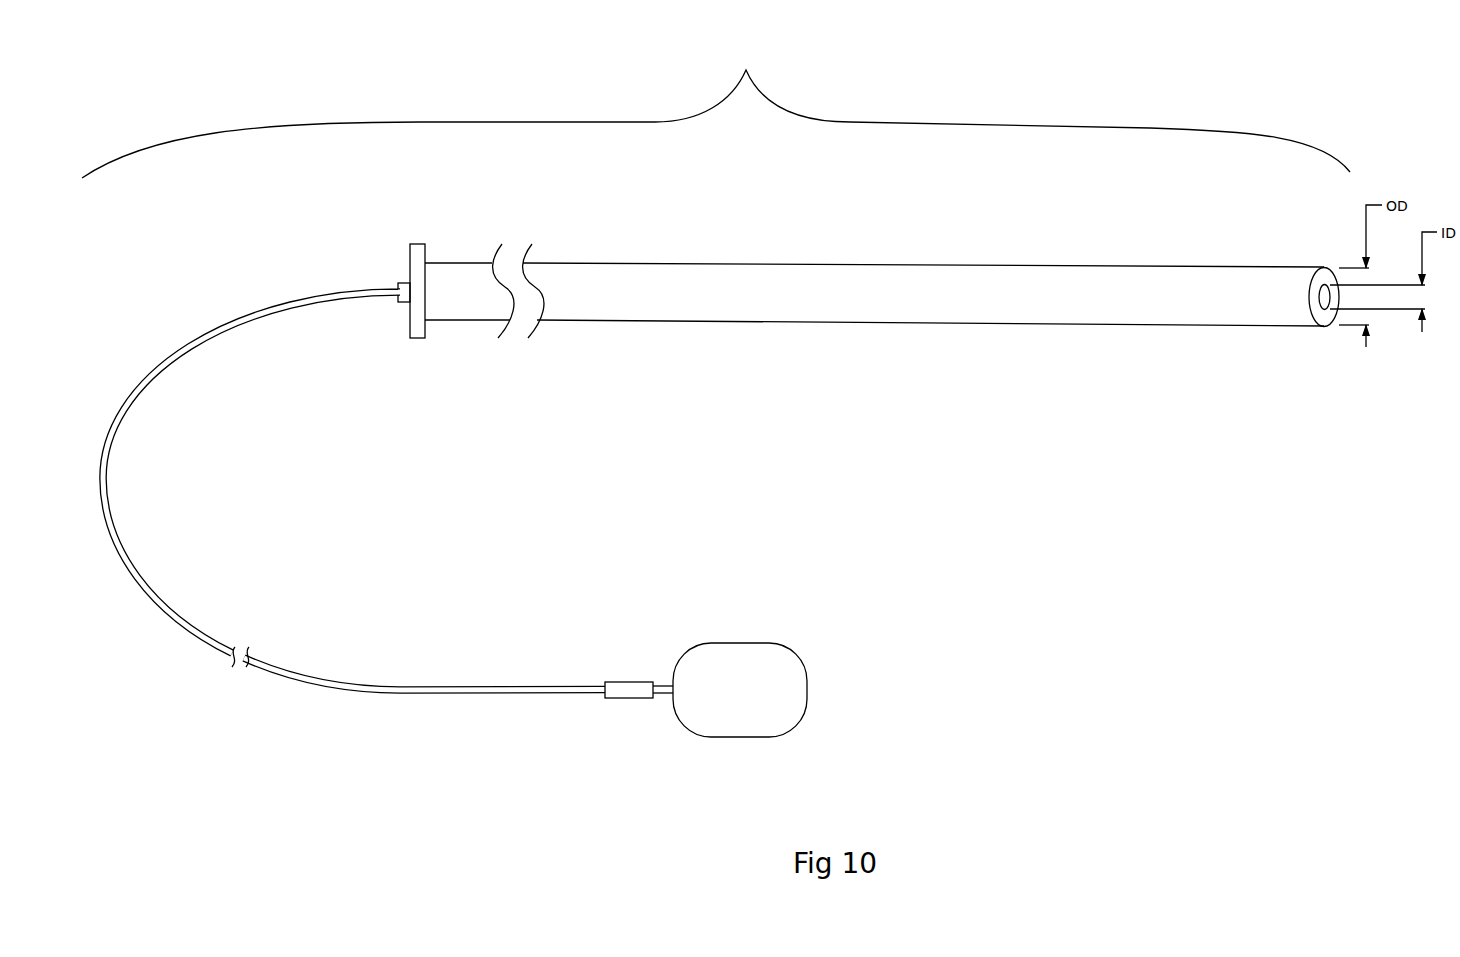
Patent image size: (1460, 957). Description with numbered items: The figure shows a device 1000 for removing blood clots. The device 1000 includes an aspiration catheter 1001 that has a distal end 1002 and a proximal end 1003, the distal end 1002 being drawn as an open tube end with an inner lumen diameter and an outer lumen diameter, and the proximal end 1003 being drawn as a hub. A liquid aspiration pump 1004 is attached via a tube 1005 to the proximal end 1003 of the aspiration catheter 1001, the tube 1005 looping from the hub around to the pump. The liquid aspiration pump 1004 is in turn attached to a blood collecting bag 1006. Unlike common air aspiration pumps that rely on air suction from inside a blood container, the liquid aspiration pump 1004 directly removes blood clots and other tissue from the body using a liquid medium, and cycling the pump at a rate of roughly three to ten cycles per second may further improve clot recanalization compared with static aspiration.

The device 1000 is at (716, 111).
The aspiration catheter 1001 is at (813, 263).
The distal end 1002 is at (1326, 328).
The proximal end 1003 is at (420, 240).
The liquid aspiration pump 1004 is at (630, 684).
The tube 1005 is at (128, 552).
The blood collecting bag 1006 is at (762, 642).